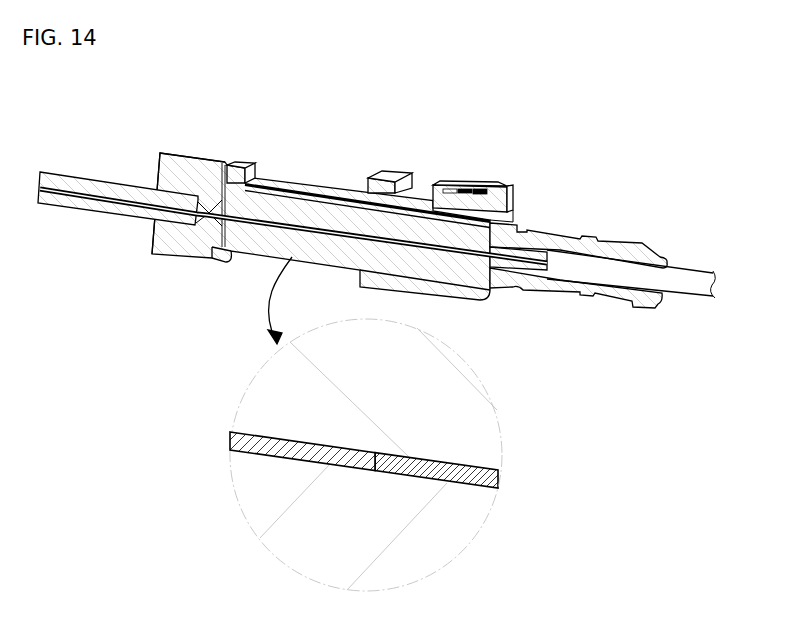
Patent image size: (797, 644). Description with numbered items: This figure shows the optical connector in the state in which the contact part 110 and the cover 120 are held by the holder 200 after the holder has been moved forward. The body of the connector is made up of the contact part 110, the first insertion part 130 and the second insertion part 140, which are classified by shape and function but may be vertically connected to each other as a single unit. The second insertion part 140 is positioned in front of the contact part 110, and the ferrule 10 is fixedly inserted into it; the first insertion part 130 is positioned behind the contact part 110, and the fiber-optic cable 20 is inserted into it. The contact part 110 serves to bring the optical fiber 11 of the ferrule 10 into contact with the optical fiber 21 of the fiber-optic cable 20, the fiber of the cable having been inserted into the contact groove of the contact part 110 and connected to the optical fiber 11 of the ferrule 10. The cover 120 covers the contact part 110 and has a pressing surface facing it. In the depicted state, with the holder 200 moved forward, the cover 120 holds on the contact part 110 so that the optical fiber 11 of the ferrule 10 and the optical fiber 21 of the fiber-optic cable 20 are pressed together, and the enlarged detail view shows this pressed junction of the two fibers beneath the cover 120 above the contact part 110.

The ferrule 10 is at (96, 207).
The optical fiber 11 is at (230, 437).
The fiber-optic cable 20 is at (688, 273).
The optical fiber 21 is at (534, 247).
The contact part 110 is at (353, 257).
The cover 120 is at (312, 183).
The first insertion part 130 is at (618, 242).
The second insertion part 140 is at (186, 172).
The holder 200 is at (469, 160).